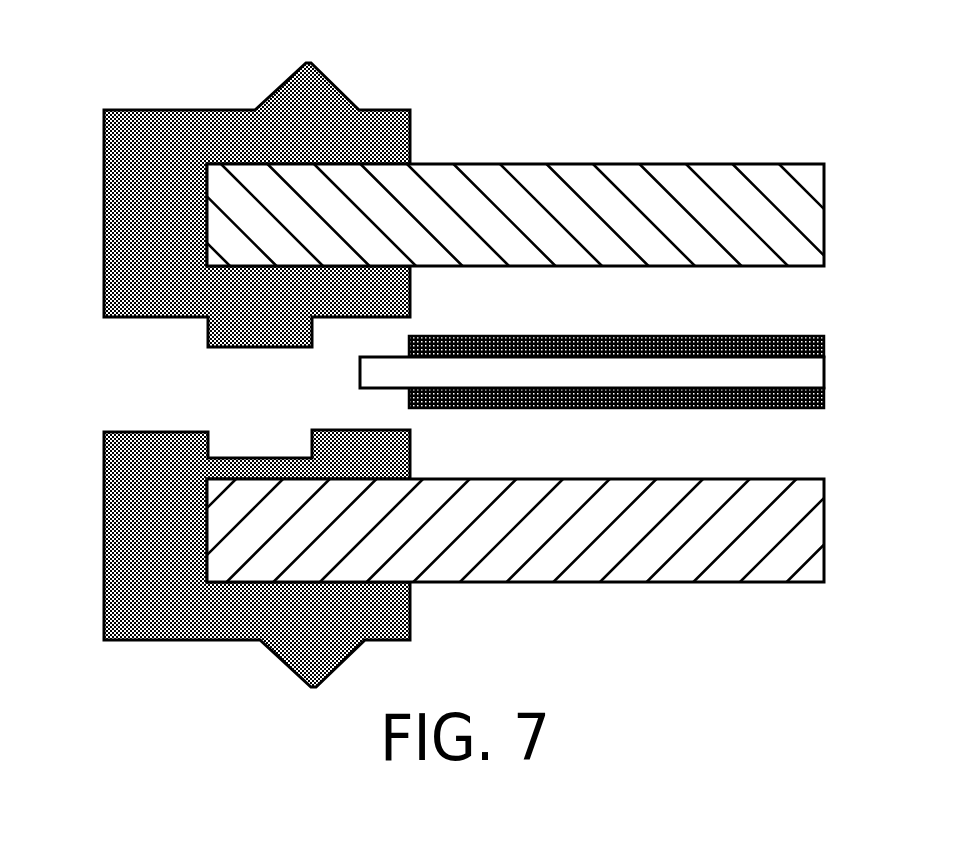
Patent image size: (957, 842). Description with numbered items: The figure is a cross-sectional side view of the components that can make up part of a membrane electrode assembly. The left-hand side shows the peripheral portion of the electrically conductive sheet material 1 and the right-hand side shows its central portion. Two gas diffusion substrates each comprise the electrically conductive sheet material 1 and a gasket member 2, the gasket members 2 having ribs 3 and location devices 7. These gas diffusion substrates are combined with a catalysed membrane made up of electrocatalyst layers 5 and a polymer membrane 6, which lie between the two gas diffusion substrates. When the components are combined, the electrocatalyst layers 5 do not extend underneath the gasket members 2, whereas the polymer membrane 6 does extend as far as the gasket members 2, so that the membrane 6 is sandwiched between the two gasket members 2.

The electrically conductive sheet material 1 is at (702, 163).
The gasket member 2 is at (128, 573).
The rib 3 is at (326, 62).
The electrocatalyst layer 5 is at (825, 347).
The polymer membrane 6 is at (508, 373).
The location device 7 is at (201, 357).